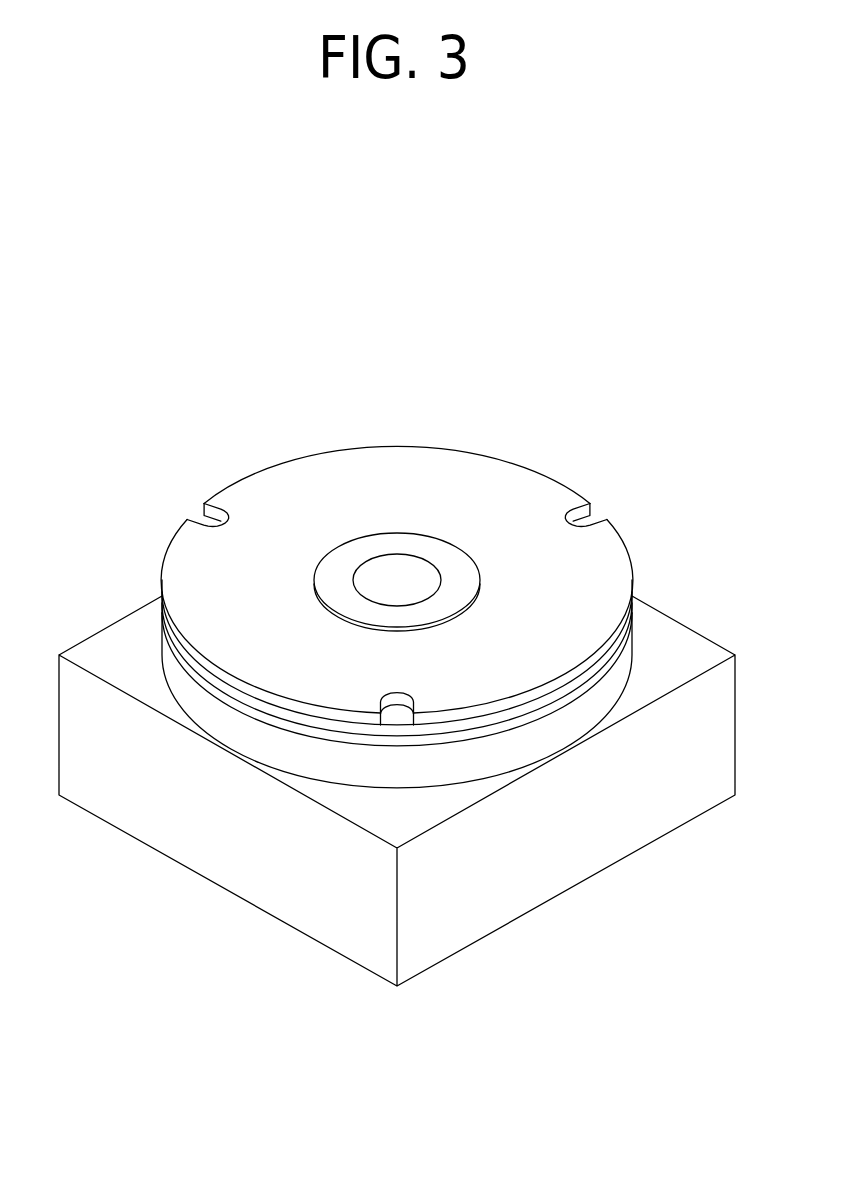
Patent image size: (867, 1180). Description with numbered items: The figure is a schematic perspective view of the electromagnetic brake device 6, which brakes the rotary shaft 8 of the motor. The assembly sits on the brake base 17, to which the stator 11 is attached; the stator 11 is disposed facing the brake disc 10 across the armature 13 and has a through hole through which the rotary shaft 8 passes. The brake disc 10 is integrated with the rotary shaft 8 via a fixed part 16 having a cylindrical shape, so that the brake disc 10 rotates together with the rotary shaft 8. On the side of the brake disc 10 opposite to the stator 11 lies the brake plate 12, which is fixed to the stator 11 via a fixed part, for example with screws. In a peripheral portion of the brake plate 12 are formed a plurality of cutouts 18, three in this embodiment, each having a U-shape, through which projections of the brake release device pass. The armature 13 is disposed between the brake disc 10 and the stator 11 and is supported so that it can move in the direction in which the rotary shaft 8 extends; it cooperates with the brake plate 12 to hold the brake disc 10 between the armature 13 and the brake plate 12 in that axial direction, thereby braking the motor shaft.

The electromagnetic brake device 6 is at (243, 411).
The rotary shaft 8 is at (374, 582).
The brake disc 10 is at (397, 507).
The stator 11 is at (239, 732).
The brake plate 12 is at (463, 478).
The armature 13 is at (533, 715).
The fixed part 16 is at (403, 545).
The brake base 17 is at (512, 892).
The cutouts 18 is at (194, 518).